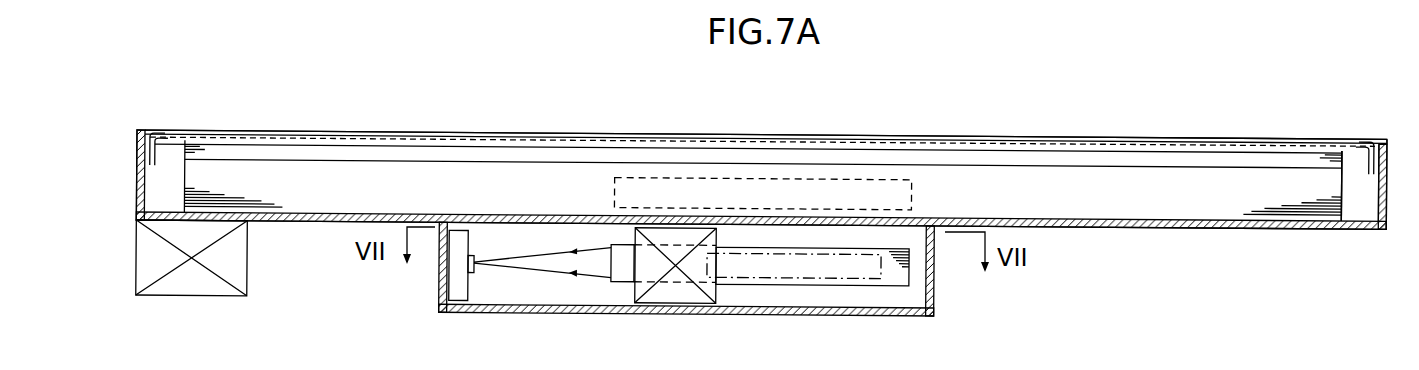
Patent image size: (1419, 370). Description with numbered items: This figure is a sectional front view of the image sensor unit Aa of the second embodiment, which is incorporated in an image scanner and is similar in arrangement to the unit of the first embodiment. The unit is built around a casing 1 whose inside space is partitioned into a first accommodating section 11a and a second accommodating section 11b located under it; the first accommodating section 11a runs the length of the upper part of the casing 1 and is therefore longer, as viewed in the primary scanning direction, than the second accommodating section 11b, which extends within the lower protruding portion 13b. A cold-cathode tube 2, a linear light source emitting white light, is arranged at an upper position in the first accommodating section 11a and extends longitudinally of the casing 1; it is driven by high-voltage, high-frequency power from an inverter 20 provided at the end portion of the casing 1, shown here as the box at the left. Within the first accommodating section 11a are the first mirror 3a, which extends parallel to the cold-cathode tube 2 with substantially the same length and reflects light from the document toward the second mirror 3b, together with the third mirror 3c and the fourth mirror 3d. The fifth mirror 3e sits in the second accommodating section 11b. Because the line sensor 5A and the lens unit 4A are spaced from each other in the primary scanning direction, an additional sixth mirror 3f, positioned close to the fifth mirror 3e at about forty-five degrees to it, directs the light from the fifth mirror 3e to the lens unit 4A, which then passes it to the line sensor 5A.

The image sensor unit Aa is at (1190, 93).
The casing 1 is at (1062, 228).
The cold-cathode tube 2 is at (1060, 138).
The first mirror 3a is at (1267, 165).
The second mirror 3b is at (1258, 198).
The third mirror 3c is at (1200, 198).
The fourth mirror 3d is at (818, 190).
The fifth mirror 3e is at (893, 278).
The sixth mirror 3f is at (847, 272).
The lens unit 4A is at (680, 293).
The line sensor 5A is at (484, 287).
The first accommodating section 11a is at (1360, 203).
The second accommodating section 11b is at (915, 297).
The lower protruding portion 13b is at (932, 318).
The inverter 20 is at (198, 282).